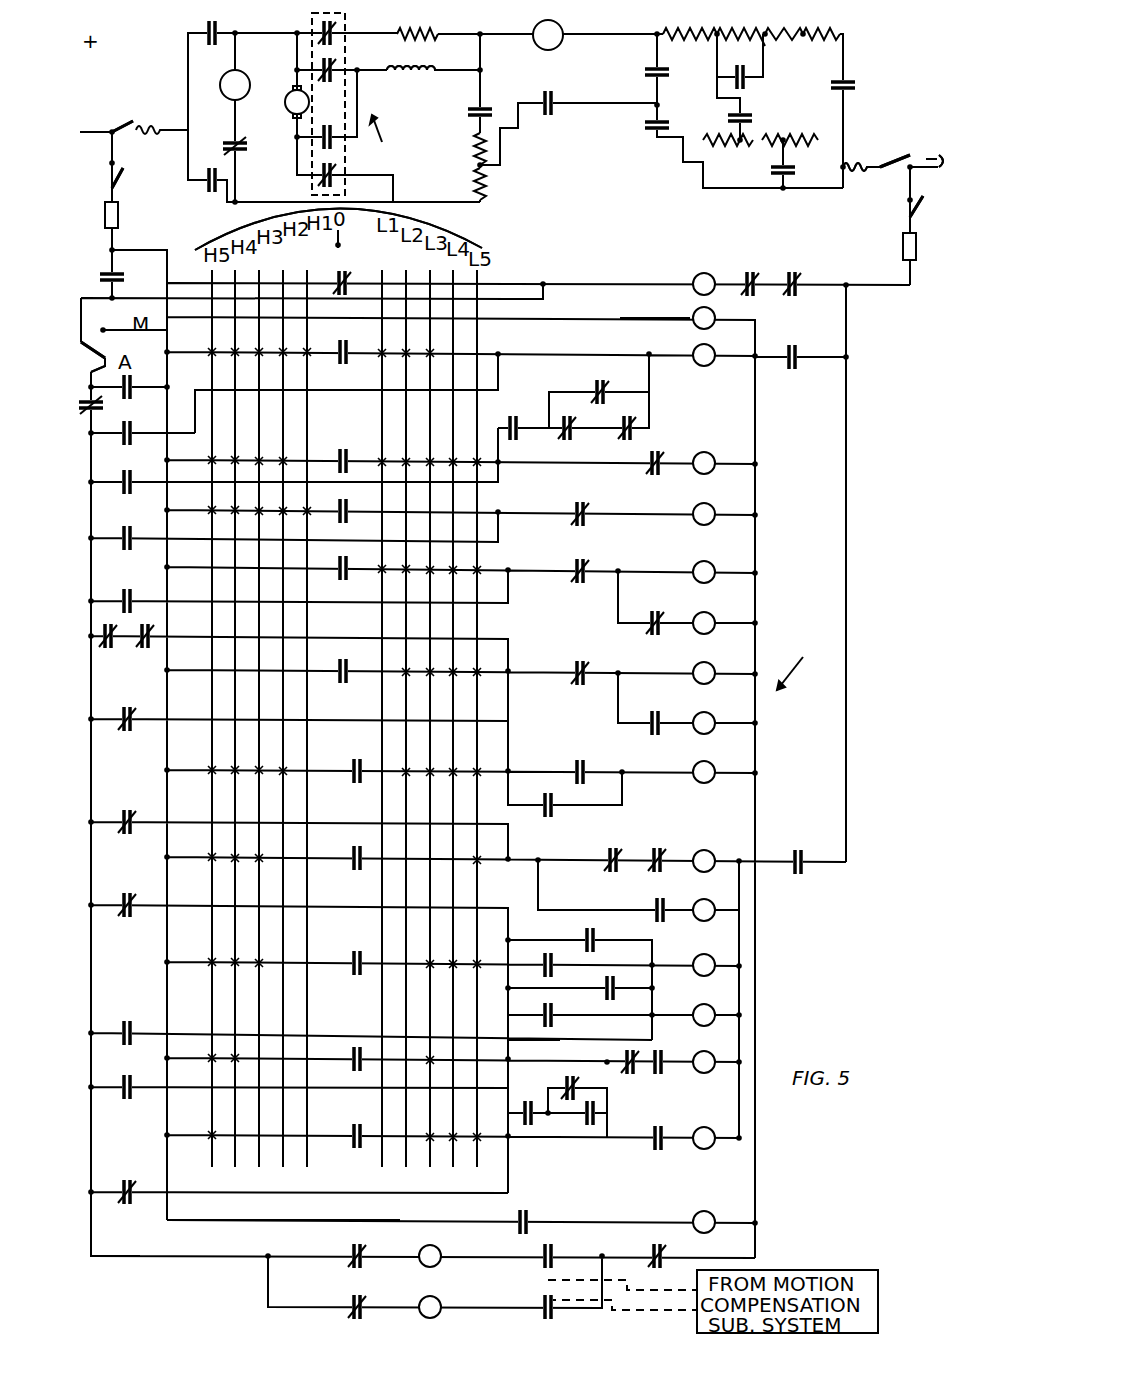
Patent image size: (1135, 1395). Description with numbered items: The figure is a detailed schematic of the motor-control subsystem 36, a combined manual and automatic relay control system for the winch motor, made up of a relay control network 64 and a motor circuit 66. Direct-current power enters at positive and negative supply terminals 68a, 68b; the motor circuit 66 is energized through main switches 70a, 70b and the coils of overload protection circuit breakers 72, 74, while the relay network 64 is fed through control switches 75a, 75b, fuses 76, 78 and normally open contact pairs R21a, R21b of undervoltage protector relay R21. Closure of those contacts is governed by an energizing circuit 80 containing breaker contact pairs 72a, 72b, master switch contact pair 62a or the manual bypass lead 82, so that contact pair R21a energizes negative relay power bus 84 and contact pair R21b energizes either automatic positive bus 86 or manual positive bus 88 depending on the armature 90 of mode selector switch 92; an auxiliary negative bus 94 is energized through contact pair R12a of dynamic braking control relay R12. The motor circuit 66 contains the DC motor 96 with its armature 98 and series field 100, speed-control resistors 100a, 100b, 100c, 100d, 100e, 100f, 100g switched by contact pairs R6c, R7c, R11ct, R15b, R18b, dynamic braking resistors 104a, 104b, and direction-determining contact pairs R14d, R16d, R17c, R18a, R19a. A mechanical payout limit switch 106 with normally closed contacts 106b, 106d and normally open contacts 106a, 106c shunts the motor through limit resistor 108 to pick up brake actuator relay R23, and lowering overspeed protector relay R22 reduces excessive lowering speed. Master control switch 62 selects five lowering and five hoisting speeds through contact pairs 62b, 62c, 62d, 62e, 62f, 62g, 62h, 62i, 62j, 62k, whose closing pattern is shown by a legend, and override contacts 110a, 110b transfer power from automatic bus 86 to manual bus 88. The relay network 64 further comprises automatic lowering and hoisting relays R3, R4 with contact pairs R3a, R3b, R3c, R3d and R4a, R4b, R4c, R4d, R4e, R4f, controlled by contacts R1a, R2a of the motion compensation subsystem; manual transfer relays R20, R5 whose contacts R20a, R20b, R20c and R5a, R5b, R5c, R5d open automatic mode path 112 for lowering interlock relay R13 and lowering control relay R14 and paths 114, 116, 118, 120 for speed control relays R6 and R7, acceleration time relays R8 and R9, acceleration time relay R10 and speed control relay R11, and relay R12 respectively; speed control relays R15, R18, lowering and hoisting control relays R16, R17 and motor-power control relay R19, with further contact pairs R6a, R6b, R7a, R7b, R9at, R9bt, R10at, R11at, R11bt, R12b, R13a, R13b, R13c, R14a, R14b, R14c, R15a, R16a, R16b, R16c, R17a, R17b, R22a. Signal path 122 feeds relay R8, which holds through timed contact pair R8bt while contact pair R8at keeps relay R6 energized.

The motor-control subsystem 36 is at (900, 588).
The master control switch 62 is at (459, 238).
The master switch contact pair 62a is at (330, 284).
The manual contact pair 62b is at (336, 366).
The manual contact pair 62c is at (338, 456).
The manual contact pair 62d is at (357, 520).
The manual contact pair 62e is at (344, 572).
The manual contact pair 62f is at (350, 674).
The manual contact pair 62g is at (347, 774).
The manual contact pair 62h is at (349, 864).
The manual contact pair 62i is at (350, 960).
The manual contact pair 62j is at (349, 1046).
The manual contact pair 62k is at (351, 1134).
The relay control network 64 is at (803, 660).
The motor circuit 66 is at (592, 196).
The positive power supply terminal 68a is at (78, 120).
The negative power supply terminal 68b is at (924, 150).
The main switch 70a is at (127, 118).
The main switch 70b is at (886, 148).
The overload protection circuit breaker 72 is at (122, 180).
The overload protection breaker contact pair 72a is at (747, 273).
The overload protection breaker contact pair 72b is at (789, 273).
The overload protection circuit breaker 74 is at (859, 158).
The control switch 75a is at (118, 198).
The control switch 75b is at (904, 204).
The fuse 76 is at (102, 218).
The fuse 78 is at (903, 252).
The energizing circuit 80 is at (648, 294).
The manual bypass lead 82 is at (543, 299).
The negative relay power bus 84 is at (760, 812).
The automatic mode positive power bus 86 is at (88, 1260).
The manual mode positive power bus 88 is at (166, 978).
The armature 90 is at (111, 348).
The mode selector switch 92 is at (84, 338).
The auxiliary negative power bus 94 is at (758, 994).
The DC motor 96 is at (383, 139).
The armature 98 is at (287, 105).
The series field 100 is at (410, 71).
The speed-control resistor 100a is at (687, 22).
The speed-control resistor 100b is at (744, 25).
The speed-control resistor 100c is at (794, 22).
The speed-control resistor 100d is at (821, 34).
The speed-control resistor 100e is at (720, 148).
The speed-control resistor 100f is at (767, 191).
The speed-control resistor 100g is at (808, 140).
The dynamic braking resistor 104a is at (474, 188).
The dynamic braking resistor 104b is at (474, 152).
The mechanical payout limit switch 106 is at (312, 27).
The normally open limit switch contact 106a is at (312, 36).
The normally closed limit switch contact 106b is at (333, 72).
The normally open limit switch contact 106c is at (314, 138).
The normally closed limit switch contact 106d is at (312, 175).
The limit resistor 108 is at (430, 34).
The manual override contact pair 110a is at (98, 407).
The manual override contact pair 110b is at (150, 383).
The automatic mode path 112 is at (508, 639).
The automatic mode path 114 is at (272, 1202).
The automatic mode path 116 is at (508, 908).
The automatic mode path 118 is at (508, 845).
The automatic mode path 120 is at (494, 720).
The signal path 122 is at (516, 1038).
The relay contact R1a is at (546, 1312).
The relay contact R2a is at (550, 1256).
The automatic mode lowering control relay R3 is at (442, 1312).
The relay contact pair R3a is at (345, 1254).
The relay contact pair R3b is at (118, 1030).
The relay contact pair R3c is at (660, 846).
The relay contact pair R3d is at (120, 600).
The automatic mode hoisting control relay R4 is at (444, 1262).
The relay contact pair R4a is at (345, 1304).
The relay contact pair R4b is at (120, 1098).
The relay contact pair R4c is at (150, 644).
The relay contact pair R4d is at (120, 536).
The relay contact pair R4e is at (116, 482).
The relay contact pair R4f is at (145, 430).
The manual mode transfer control relay R5 is at (714, 1213).
The relay contact pair R5a is at (120, 1182).
The relay contact pair R5b is at (116, 902).
The relay contact pair R5c is at (117, 820).
The relay contact pair R5d is at (120, 728).
The motor-speed control relay R6 is at (710, 1148).
The relay contact pair R6a is at (650, 718).
The relay contact pair R6b is at (642, 426).
The relay contact pair R6c is at (655, 128).
The motor-speed control relay R7 is at (712, 1049).
The relay contact pair R7a is at (546, 1018).
The relay contact pair R7b is at (575, 438).
The relay contact pair R7c is at (803, 190).
The motor-acceleration time control relay R8 is at (711, 1002).
The timed release contact pair R8at is at (660, 1148).
The timed release contact pair R8bt is at (622, 986).
The motor-acceleration time control relay R9 is at (708, 952).
The timed release contact pair R9at is at (664, 1072).
The timed release contact pair R9bt is at (648, 614).
The motor-acceleration time control relay R10 is at (713, 897).
The timed release contact pair R10at is at (662, 470).
The motor-speed control relay R11 is at (706, 856).
The timed release contact pair R11at is at (584, 938).
The timed release contact pair R11bt is at (584, 566).
The timed release contact pair R11ct is at (654, 70).
The dynamic braking control relay R12 is at (706, 770).
The relay contact pair R12a is at (792, 876).
The relay contact pair R12b is at (468, 112).
The lowering interlock relay R13 is at (706, 720).
The relay contact pair R13a is at (568, 1082).
The relay contact pair R13b is at (654, 908).
The relay contact pair R13c is at (615, 382).
The lowering control relay R14 is at (706, 670).
The relay contact pair R14a is at (530, 1126).
The relay contact pair R14b is at (572, 762).
The relay contact pair R14c is at (575, 514).
The relay contact pair R14d is at (548, 100).
The motor-speed control relay R15 is at (706, 618).
The relay contact pair R15a is at (632, 1076).
The relay contact pair R15b is at (732, 110).
The lowering control relay R16 is at (706, 568).
The relay contact pair R16a is at (540, 970).
The relay contact pair R16b is at (612, 848).
The relay contact pair R16c is at (516, 416).
The relay contact pair R16d is at (190, 32).
The hoisting control relay R17 is at (706, 510).
The relay contact pair R17a is at (548, 806).
The relay contact pair R17b is at (577, 660).
The relay contact pair R17c is at (193, 195).
The motor-speed control relay R18 is at (706, 454).
The relay contact pair R18a is at (228, 142).
The relay contact pair R18b is at (748, 80).
The motor-power control relay R19 is at (698, 366).
The relay contact pair R19a is at (850, 80).
The manual mode transfer control relay R20 is at (693, 325).
The relay contact pair R20a is at (638, 1256).
The relay contact pair R20b is at (531, 1220).
The relay contact pair R20c is at (92, 640).
The undervoltage protector relay R21 is at (702, 273).
The relay contact pair R21a is at (803, 364).
The relay contact pair R21b is at (120, 272).
The lowering overspeed protector relay R22 is at (218, 76).
The relay contact pair R22a is at (592, 1126).
The mechanical brake actuator relay R23 is at (558, 36).